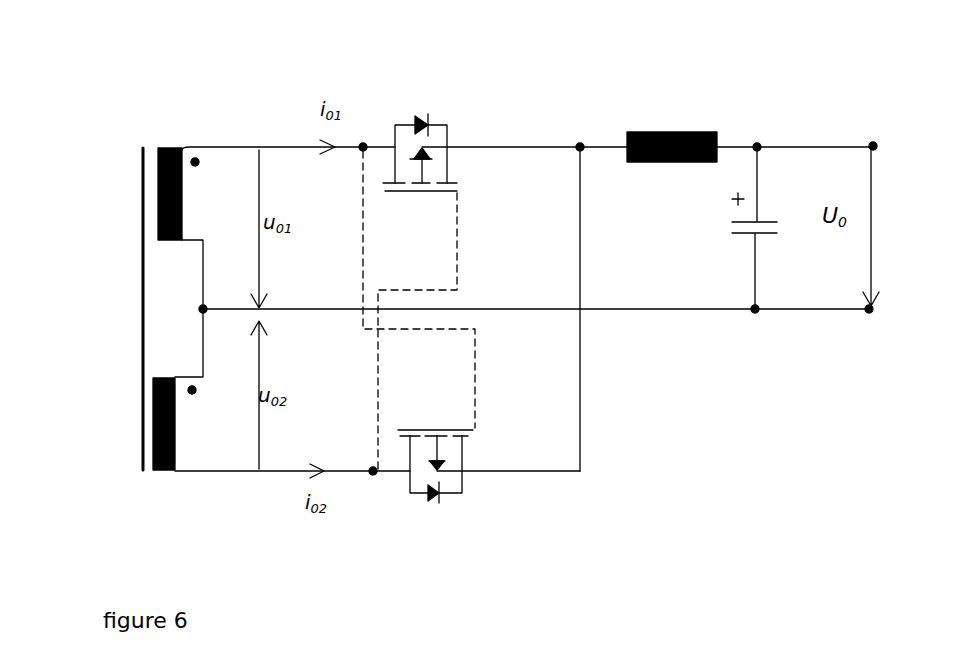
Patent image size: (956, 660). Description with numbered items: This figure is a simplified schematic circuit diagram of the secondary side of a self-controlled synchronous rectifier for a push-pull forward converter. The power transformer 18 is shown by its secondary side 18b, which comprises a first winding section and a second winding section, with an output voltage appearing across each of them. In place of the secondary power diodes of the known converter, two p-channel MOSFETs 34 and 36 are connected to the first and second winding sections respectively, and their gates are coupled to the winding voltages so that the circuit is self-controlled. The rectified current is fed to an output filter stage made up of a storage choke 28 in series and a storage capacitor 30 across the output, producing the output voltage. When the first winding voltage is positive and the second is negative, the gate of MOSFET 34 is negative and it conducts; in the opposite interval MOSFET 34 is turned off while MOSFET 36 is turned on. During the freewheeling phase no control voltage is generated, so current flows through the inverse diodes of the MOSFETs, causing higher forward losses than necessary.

The power transformer 18 is at (118, 114).
The secondary side 18b is at (186, 93).
The MOSFET 34 is at (431, 98).
The MOSFET 36 is at (472, 456).
The storage choke 28 is at (687, 132).
The storage capacitor 30 is at (765, 200).